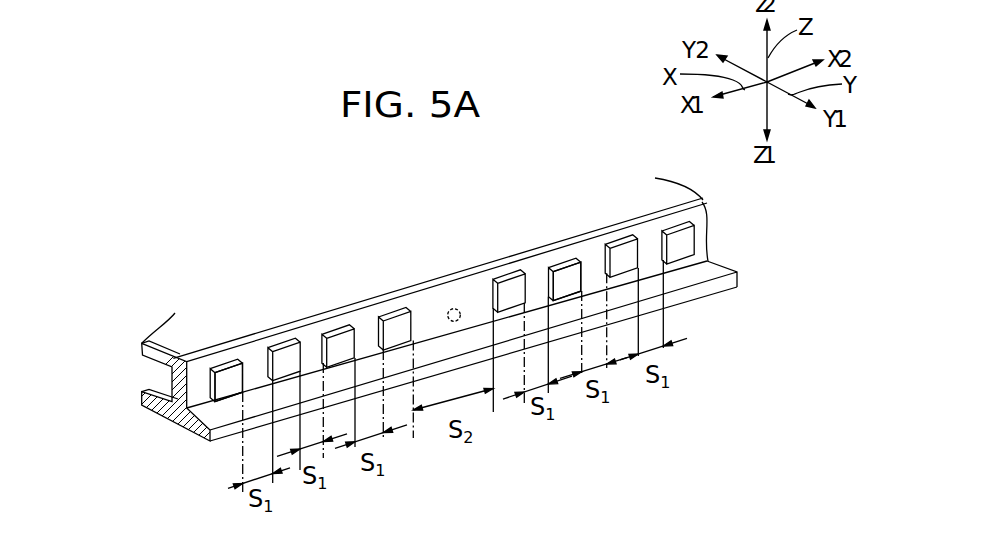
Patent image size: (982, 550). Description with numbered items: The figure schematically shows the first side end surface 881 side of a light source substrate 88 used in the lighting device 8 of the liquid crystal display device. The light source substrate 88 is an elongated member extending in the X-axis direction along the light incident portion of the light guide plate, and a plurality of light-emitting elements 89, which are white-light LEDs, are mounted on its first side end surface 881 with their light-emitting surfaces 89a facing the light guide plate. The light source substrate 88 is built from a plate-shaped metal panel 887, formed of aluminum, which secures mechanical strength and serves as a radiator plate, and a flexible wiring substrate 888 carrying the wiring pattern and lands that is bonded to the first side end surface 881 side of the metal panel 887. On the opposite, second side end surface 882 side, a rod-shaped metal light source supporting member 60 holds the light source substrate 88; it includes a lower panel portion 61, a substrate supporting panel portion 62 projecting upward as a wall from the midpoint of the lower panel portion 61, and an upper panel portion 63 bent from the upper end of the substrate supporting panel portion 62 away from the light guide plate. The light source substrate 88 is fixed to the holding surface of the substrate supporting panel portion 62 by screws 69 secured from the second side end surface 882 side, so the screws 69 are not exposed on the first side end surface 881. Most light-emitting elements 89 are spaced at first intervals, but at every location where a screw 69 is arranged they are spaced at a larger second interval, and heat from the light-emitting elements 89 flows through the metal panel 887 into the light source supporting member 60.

The lighting device 8 is at (289, 157).
The light source substrate 88 is at (377, 222).
The metal panel 887 is at (329, 318).
The flexible wiring substrate 888 is at (378, 297).
The first side end surface 881 is at (464, 282).
The second side end surface 882 is at (152, 411).
The light source supporting member 60 is at (137, 343).
The lower panel portion 61 is at (141, 392).
The substrate supporting panel portion 62 is at (172, 370).
The upper panel portion 63 is at (162, 362).
The screw 69 is at (452, 306).
The light-emitting element 89 is at (287, 373).
The light-emitting surface 89a is at (234, 398).